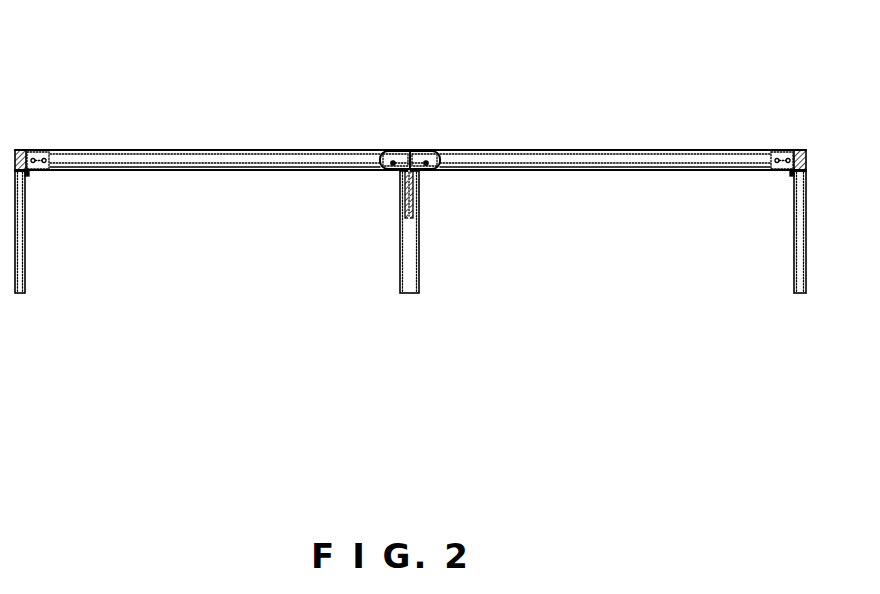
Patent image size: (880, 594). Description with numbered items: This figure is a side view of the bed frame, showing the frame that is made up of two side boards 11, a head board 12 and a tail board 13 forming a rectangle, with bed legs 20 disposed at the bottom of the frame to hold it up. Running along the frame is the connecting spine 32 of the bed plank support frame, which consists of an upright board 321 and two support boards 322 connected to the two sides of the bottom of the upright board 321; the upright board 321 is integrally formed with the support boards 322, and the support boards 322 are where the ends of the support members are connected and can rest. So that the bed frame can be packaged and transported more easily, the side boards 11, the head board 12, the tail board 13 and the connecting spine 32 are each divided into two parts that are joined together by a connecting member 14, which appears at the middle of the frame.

The side board 11 is at (277, 152).
The head board 12 is at (800, 150).
The tail board 13 is at (20, 150).
The connecting member 14 is at (421, 152).
The bed leg 20 is at (23, 254).
The connecting spine 32 is at (632, 300).
The upright board 321 is at (530, 164).
The support board 322 is at (608, 164).